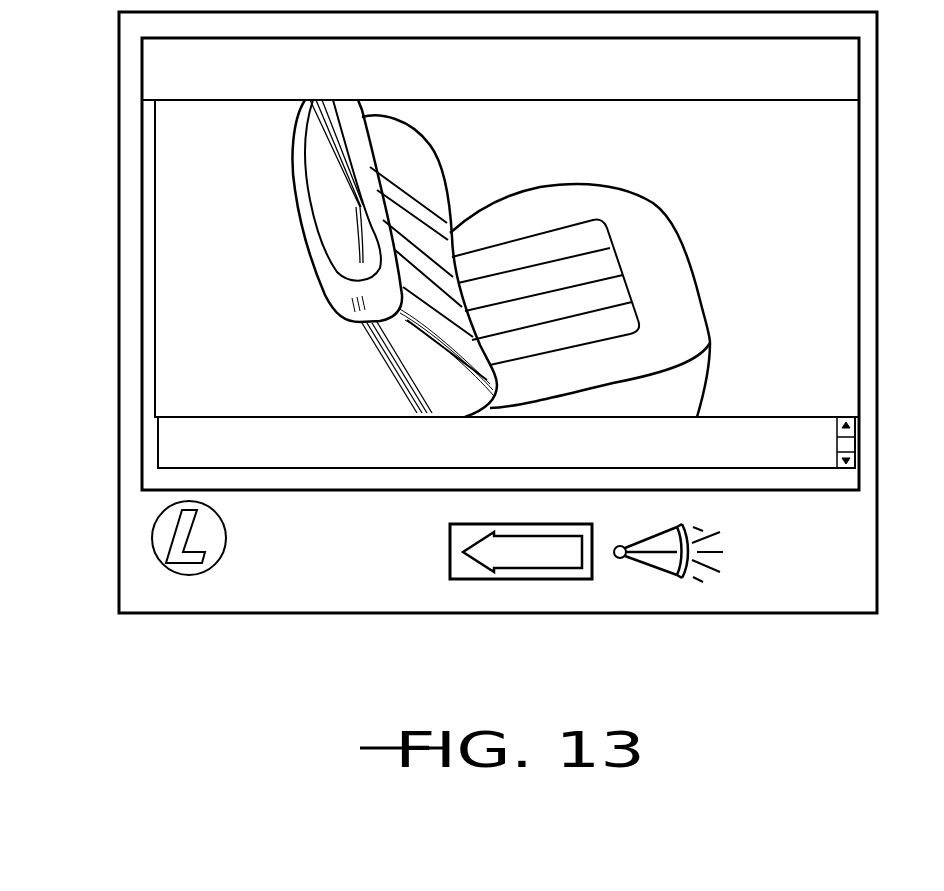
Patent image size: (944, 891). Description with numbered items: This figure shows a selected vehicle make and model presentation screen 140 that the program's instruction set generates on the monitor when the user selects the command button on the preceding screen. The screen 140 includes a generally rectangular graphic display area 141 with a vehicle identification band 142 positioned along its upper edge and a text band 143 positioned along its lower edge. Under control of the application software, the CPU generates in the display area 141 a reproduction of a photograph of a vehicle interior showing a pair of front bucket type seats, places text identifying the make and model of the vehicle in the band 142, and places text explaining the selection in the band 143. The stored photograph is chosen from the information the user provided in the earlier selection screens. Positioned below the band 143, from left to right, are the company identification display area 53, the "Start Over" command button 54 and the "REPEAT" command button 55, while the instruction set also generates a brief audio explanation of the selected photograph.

The selected vehicle make and model presentation screen 140 is at (119, 297).
The graphic display area 141 is at (140, 178).
The vehicle identification band 142 is at (155, 71).
The text band 143 is at (158, 462).
The company identification display area 53 is at (237, 568).
The "Start Over" command button 54 is at (481, 580).
The "REPEAT" command button 55 is at (622, 568).